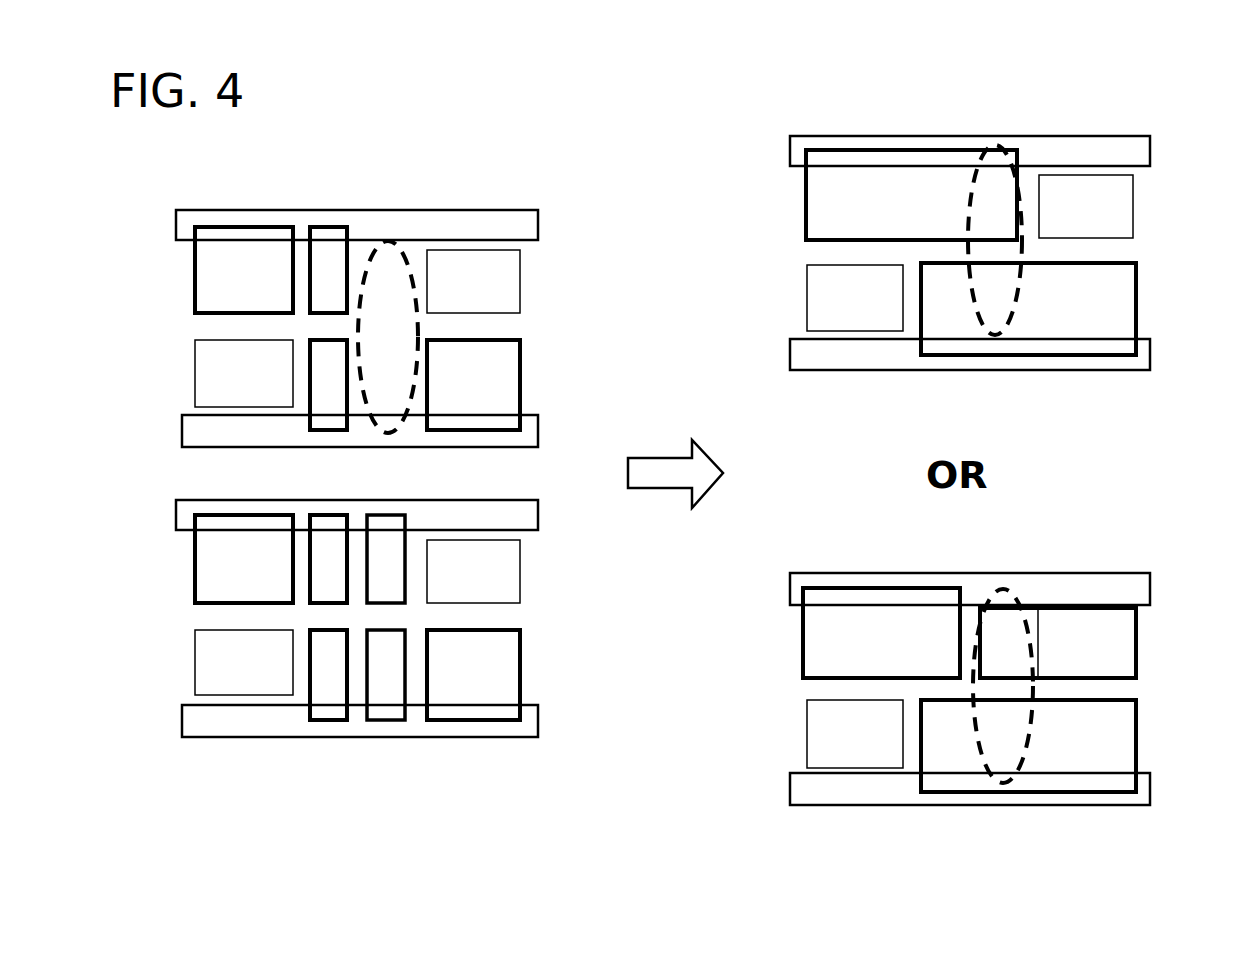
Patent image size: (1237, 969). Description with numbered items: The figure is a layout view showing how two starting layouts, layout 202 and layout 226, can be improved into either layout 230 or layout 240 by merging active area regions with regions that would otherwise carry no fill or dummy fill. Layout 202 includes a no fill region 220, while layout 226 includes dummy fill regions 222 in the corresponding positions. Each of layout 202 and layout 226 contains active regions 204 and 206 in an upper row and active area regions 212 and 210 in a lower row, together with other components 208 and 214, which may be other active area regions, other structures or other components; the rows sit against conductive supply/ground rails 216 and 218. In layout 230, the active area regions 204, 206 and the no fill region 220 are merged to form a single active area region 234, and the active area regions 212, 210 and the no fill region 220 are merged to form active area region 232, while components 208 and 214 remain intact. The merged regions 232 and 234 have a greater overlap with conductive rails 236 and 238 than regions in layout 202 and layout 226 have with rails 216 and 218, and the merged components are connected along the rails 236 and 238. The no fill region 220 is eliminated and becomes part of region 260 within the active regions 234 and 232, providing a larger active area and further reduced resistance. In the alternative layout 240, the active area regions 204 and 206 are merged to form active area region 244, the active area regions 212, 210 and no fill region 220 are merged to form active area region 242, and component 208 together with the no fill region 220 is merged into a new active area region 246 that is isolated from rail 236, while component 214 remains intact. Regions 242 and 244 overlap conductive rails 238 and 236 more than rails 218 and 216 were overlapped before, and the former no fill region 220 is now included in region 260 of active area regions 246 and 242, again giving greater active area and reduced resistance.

The layout 202 is at (403, 180).
The active area region 204 is at (222, 283).
The active area region 206 is at (323, 257).
The component 208 is at (453, 295).
The active area region 210 is at (453, 396).
The active area region 212 is at (311, 383).
The component 214 is at (222, 390).
The conductive rail 216 is at (468, 220).
The conductive rail 218 is at (182, 432).
The no fill region 220 is at (405, 268).
The dummy fill region 222 is at (392, 573).
The layout 226 is at (328, 790).
The layout 230 is at (918, 130).
The active area region 232 is at (1052, 321).
The active area region 234 is at (855, 210).
The conductive rail 236 is at (1105, 153).
The conductive rail 238 is at (807, 355).
The layout 240 is at (841, 566).
The active area region 242 is at (1066, 760).
The active area region 244 is at (868, 646).
The active area region 246 is at (1075, 656).
The region 260 is at (1013, 308).